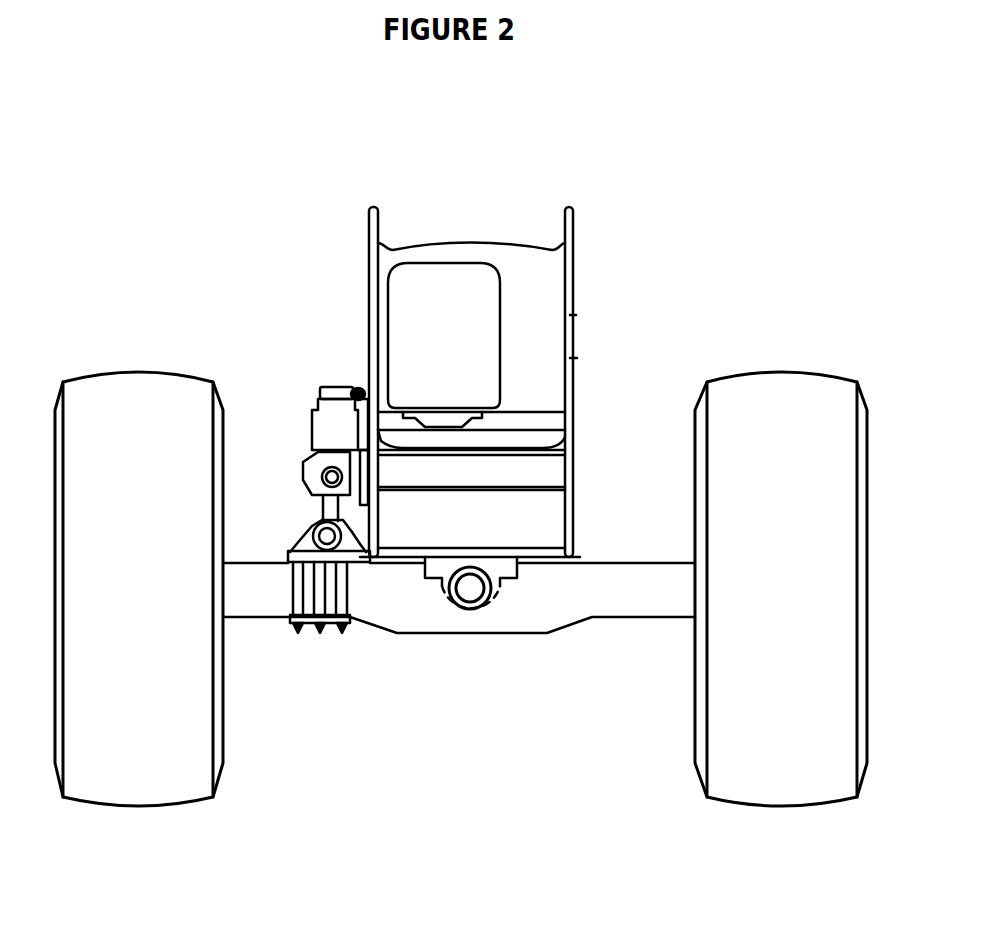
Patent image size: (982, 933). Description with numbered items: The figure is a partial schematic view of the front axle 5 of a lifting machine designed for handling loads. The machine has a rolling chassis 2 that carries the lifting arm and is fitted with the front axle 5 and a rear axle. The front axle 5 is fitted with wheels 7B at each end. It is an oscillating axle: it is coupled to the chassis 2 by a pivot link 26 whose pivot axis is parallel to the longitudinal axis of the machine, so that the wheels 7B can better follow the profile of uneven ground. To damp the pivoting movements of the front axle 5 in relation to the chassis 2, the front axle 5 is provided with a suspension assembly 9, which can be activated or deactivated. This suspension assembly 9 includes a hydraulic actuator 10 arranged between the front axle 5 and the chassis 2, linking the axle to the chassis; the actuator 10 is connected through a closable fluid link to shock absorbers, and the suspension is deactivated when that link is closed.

The chassis 2 is at (574, 320).
The front axle 5 is at (615, 619).
The wheels 7B is at (786, 371).
The suspension assembly 9 is at (298, 386).
The hydraulic actuator 10 is at (318, 503).
The pivot link 26 is at (470, 612).